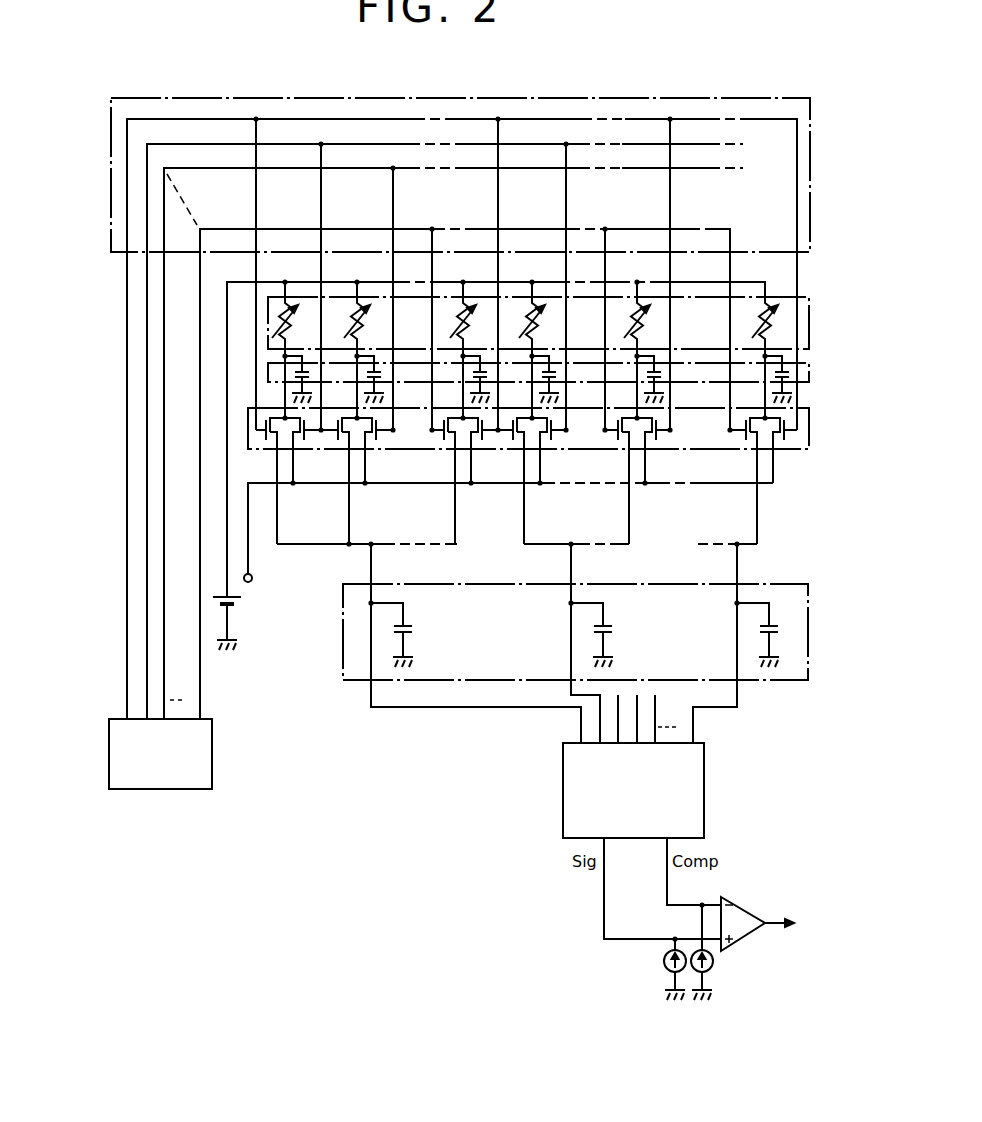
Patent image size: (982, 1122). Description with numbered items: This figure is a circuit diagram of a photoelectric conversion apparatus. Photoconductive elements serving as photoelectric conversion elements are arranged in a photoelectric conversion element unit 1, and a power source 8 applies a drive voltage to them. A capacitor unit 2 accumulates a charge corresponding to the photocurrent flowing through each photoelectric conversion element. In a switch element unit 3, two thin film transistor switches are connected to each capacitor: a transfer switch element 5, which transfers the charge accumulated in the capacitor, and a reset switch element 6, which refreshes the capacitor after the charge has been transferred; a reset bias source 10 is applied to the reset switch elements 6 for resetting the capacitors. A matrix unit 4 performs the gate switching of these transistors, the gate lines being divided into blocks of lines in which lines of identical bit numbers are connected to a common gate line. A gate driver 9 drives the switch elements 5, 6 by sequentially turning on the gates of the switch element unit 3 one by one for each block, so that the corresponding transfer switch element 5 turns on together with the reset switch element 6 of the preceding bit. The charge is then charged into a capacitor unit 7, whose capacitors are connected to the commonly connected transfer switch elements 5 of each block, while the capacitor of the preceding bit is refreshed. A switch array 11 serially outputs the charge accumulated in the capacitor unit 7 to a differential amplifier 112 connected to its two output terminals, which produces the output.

The photoelectric conversion element unit 1 is at (811, 330).
The capacitor unit 2 is at (811, 380).
The switch element unit 3 is at (546, 476).
The matrix unit 4 is at (811, 186).
The transfer switch element 5 is at (752, 446).
The reset switch element 6 is at (782, 446).
The capacitor unit 7 is at (781, 584).
The power source 8 is at (240, 603).
The gate driver 9 is at (213, 757).
The reset bias source 10 is at (253, 578).
The switch array 11 is at (705, 808).
The differential amplifier 112 is at (753, 897).